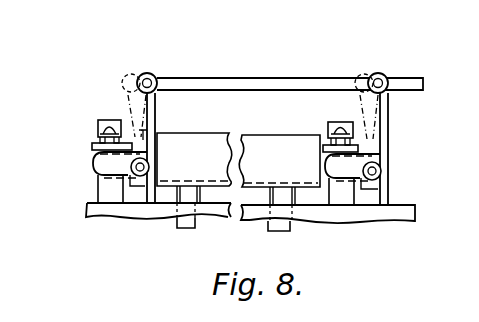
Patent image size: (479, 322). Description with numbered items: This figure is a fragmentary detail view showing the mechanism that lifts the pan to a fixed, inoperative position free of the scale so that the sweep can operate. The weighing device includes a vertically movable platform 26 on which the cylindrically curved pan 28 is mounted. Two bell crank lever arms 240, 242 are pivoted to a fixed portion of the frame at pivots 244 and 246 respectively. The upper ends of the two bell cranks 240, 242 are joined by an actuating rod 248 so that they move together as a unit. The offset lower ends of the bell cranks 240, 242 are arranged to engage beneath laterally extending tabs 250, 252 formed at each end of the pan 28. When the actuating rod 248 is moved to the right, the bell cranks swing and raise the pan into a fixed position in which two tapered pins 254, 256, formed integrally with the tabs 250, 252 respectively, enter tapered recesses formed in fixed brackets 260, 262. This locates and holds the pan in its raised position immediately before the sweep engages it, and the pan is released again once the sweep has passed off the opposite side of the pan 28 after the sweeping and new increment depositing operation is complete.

The vertically movable platform 26 is at (267, 228).
The cylindrically curved pan 28 is at (270, 143).
The bell crank lever arm 240 is at (156, 112).
The bell crank lever arm 242 is at (389, 113).
The pivot 244 is at (150, 167).
The pivot 246 is at (383, 180).
The actuating rod 248 is at (293, 78).
The laterally extending tab 250 is at (92, 147).
The laterally extending tab 252 is at (360, 150).
The tapered pin 254 is at (99, 132).
The tapered pin 256 is at (345, 150).
The fixed bracket 260 is at (115, 119).
The fixed bracket 262 is at (341, 122).